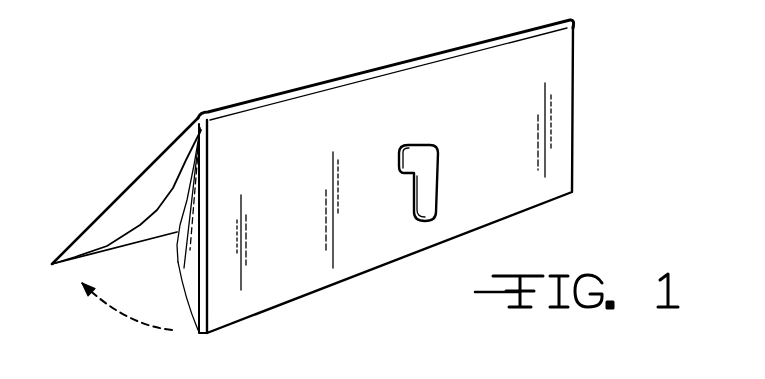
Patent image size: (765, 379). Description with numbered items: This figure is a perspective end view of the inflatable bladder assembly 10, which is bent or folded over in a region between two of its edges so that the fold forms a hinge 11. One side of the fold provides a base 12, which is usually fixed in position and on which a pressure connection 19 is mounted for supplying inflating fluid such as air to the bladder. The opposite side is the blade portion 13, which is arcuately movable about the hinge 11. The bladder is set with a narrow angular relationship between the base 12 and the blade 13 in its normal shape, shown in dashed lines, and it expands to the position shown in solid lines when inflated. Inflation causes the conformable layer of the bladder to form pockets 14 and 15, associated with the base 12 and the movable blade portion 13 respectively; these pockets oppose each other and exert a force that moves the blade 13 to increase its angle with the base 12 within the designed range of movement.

The bladder assembly 10 is at (297, 82).
The hinge 11 is at (453, 47).
The base 12 is at (280, 283).
The blade portion 13 is at (115, 203).
The pocket 14 is at (175, 253).
The pocket 15 is at (138, 228).
The pressure connection 19 is at (440, 193).